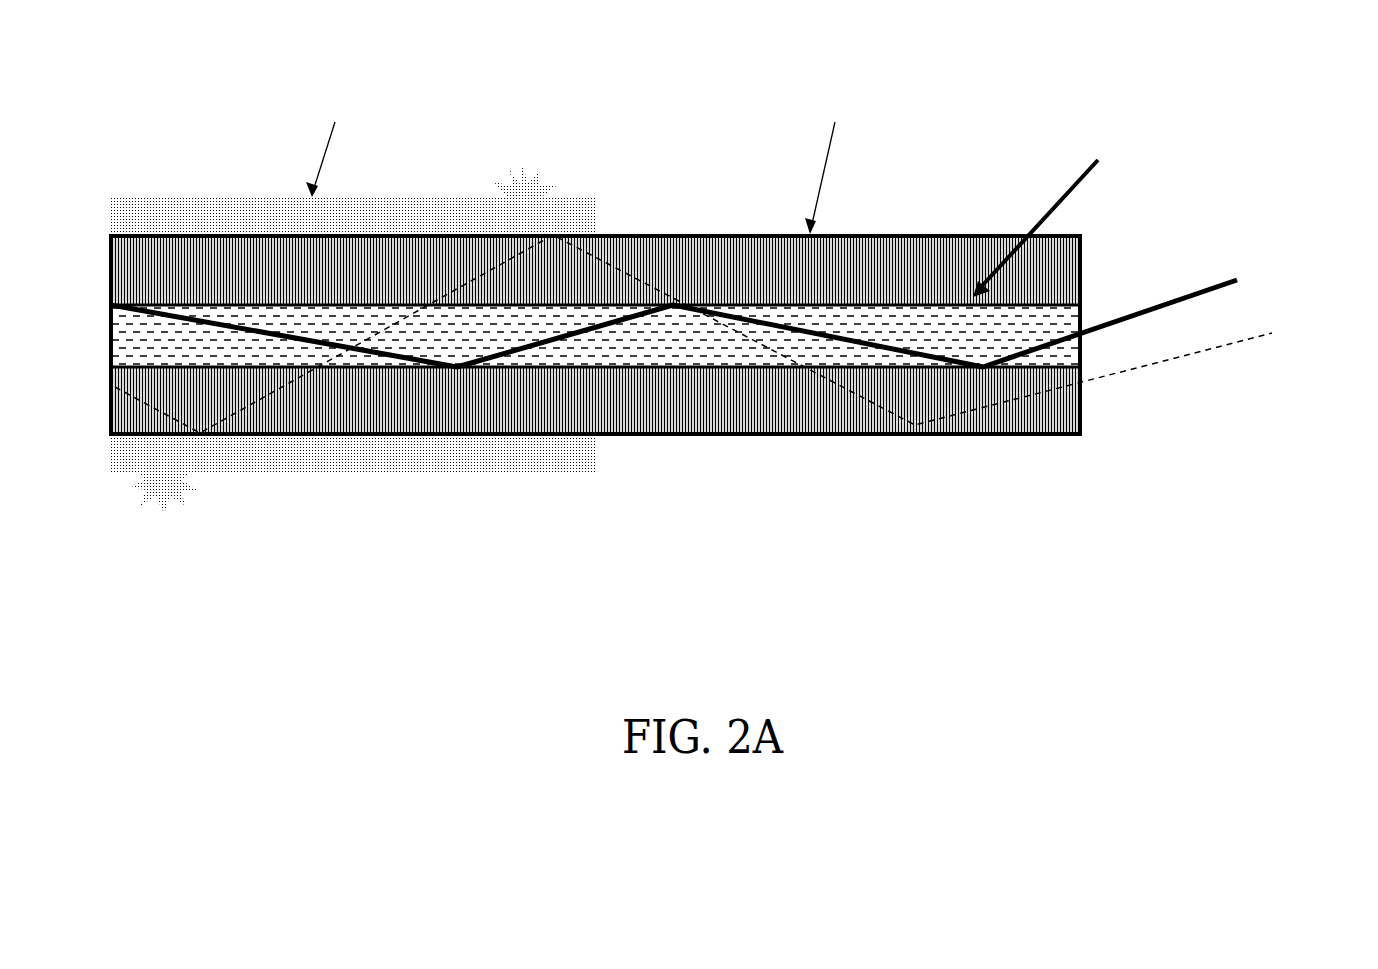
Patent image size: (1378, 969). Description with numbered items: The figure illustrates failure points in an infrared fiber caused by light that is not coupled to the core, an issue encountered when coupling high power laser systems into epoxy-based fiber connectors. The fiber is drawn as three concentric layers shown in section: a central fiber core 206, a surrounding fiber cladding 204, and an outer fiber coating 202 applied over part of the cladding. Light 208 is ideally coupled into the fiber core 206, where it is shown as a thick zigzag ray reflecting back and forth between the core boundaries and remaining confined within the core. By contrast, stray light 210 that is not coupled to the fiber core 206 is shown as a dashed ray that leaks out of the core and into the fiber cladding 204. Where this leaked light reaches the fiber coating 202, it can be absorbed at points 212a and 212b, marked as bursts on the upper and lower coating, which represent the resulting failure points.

The fiber coating 202 is at (308, 83).
The fiber cladding 204 is at (897, 82).
The fiber core 206 is at (1135, 122).
The light 208 is at (1243, 265).
The stray light 210 is at (1280, 315).
The absorption point 212a is at (522, 173).
The absorption point 212b is at (158, 517).